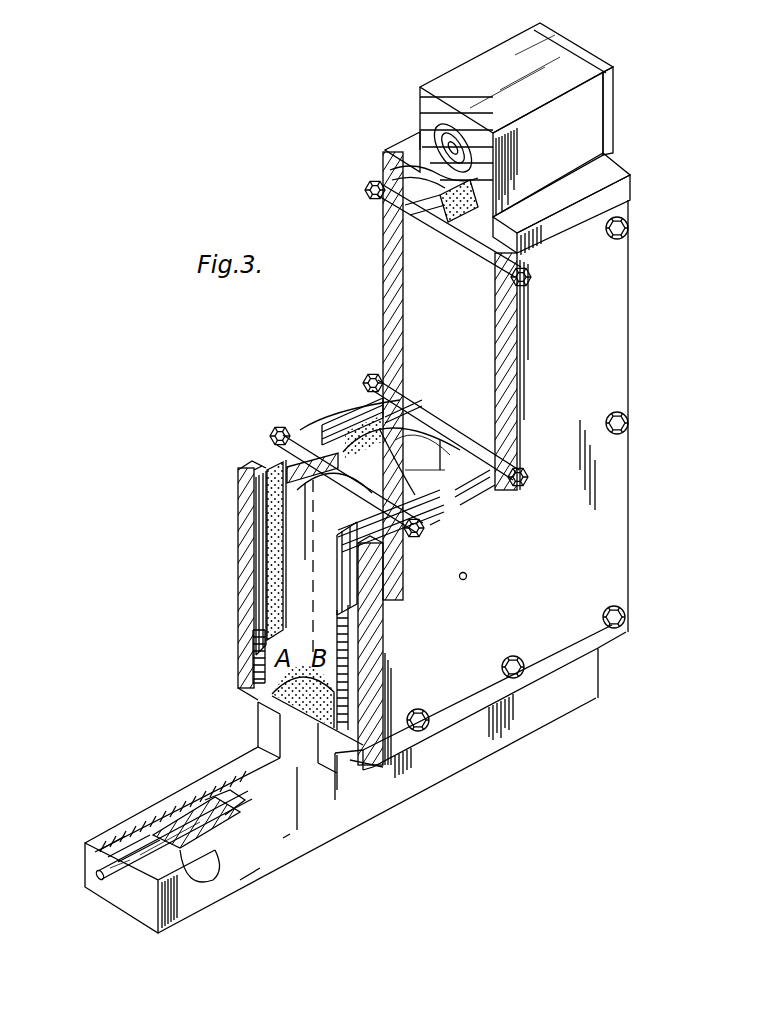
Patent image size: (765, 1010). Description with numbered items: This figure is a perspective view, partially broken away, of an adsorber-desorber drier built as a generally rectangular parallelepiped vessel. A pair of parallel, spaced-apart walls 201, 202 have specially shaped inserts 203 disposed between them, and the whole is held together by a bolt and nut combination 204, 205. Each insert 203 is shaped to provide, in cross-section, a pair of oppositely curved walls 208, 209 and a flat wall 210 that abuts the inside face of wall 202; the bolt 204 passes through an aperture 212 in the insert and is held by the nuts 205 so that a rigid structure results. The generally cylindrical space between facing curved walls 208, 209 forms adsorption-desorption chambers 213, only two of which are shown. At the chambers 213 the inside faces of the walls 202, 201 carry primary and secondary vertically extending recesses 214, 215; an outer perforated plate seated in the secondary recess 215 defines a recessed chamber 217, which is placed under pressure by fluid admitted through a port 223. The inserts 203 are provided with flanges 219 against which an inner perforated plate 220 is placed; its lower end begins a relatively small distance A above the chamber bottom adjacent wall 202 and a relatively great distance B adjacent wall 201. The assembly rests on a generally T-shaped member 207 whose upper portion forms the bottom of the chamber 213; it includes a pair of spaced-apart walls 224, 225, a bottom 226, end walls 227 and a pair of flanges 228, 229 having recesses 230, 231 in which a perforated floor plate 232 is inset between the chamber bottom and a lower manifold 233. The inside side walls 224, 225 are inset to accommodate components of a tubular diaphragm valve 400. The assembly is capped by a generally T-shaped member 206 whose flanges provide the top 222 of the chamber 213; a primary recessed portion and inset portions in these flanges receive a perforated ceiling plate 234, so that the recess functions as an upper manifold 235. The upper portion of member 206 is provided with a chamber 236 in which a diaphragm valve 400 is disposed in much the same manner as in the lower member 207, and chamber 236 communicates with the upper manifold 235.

The wall 201 is at (517, 332).
The wall 202 is at (385, 308).
The insert 203 is at (337, 447).
The bolt 204 is at (440, 536).
The nut 205 is at (268, 430).
The T-shaped member 206 is at (598, 112).
The T-shaped member 207 is at (350, 817).
The curved wall 208 is at (418, 440).
The curved wall 209 is at (318, 525).
The flat wall 210 is at (330, 440).
The aperture 212 is at (383, 528).
The adsorption-desorption chamber 213 is at (303, 512).
The primary recess 214 is at (240, 464).
The secondary recess 215 is at (275, 455).
The recessed chamber 217 is at (370, 440).
The flange 219 is at (445, 515).
The inner perforated plate 220 is at (365, 378).
The top 222 is at (432, 210).
The port 223 is at (470, 573).
The wall 224 is at (253, 762).
The wall 225 is at (243, 883).
The bottom 226 is at (287, 838).
The end wall 227 is at (90, 853).
The flange 228 is at (247, 683).
The flange 229 is at (402, 150).
The recess 230 is at (568, 222).
The recess 231 is at (395, 170).
The perforated floor plate 232 is at (520, 215).
The lower manifold 233 is at (366, 190).
The perforated ceiling plate 234 is at (462, 244).
The upper manifold 235 is at (455, 215).
The chamber 236 is at (450, 130).
The tubular diaphragm valve 400 is at (457, 140).